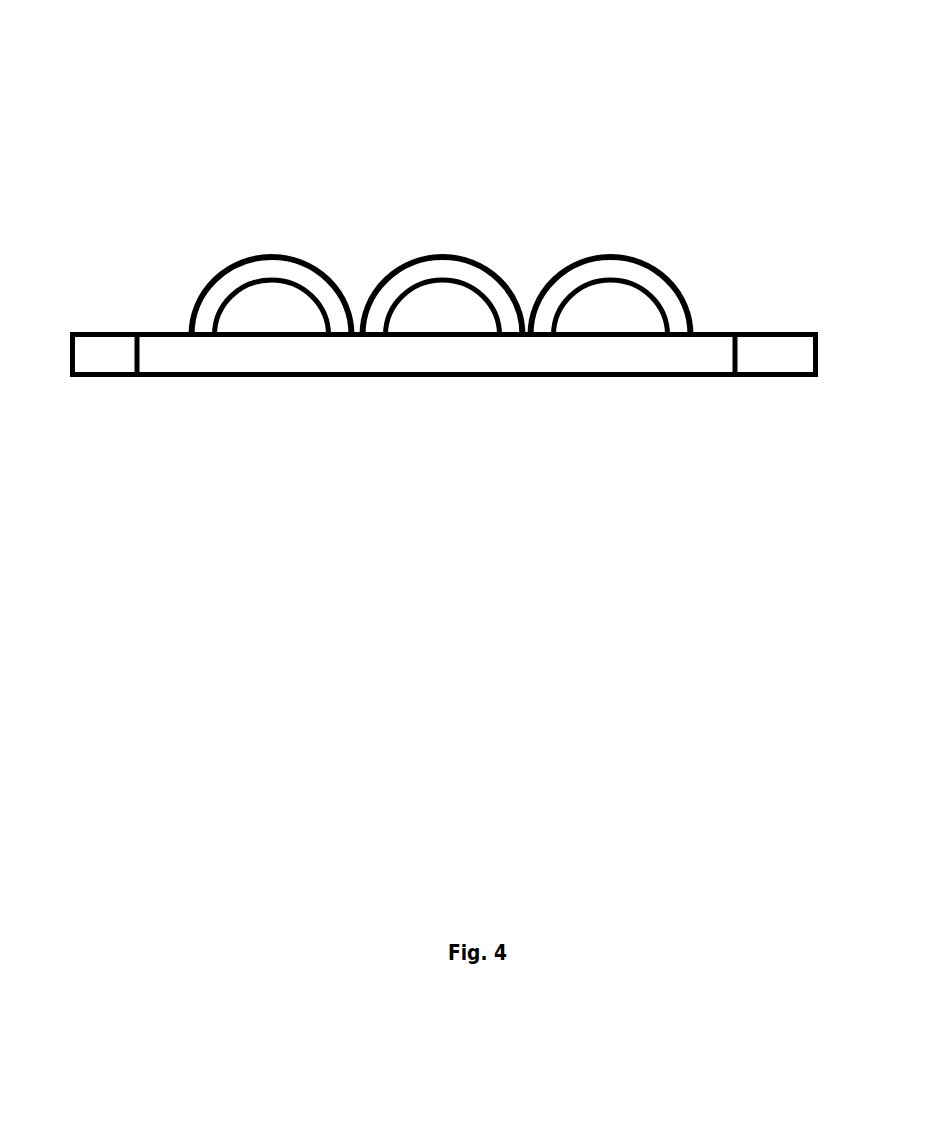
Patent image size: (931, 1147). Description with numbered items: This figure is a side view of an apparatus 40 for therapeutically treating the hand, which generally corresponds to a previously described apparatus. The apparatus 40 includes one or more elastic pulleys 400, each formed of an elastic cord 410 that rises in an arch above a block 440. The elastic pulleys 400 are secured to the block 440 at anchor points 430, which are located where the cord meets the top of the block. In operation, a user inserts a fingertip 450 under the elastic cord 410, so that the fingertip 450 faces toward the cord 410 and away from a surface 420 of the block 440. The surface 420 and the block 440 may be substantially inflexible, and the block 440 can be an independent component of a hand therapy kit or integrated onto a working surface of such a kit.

The apparatus 40 is at (470, 72).
The elastic pulleys 400 is at (197, 197).
The elastic cord 410 is at (310, 240).
The surface 420 is at (150, 312).
The anchor points 430 is at (518, 362).
The block 440 is at (240, 405).
The fingertip 450 is at (462, 307).